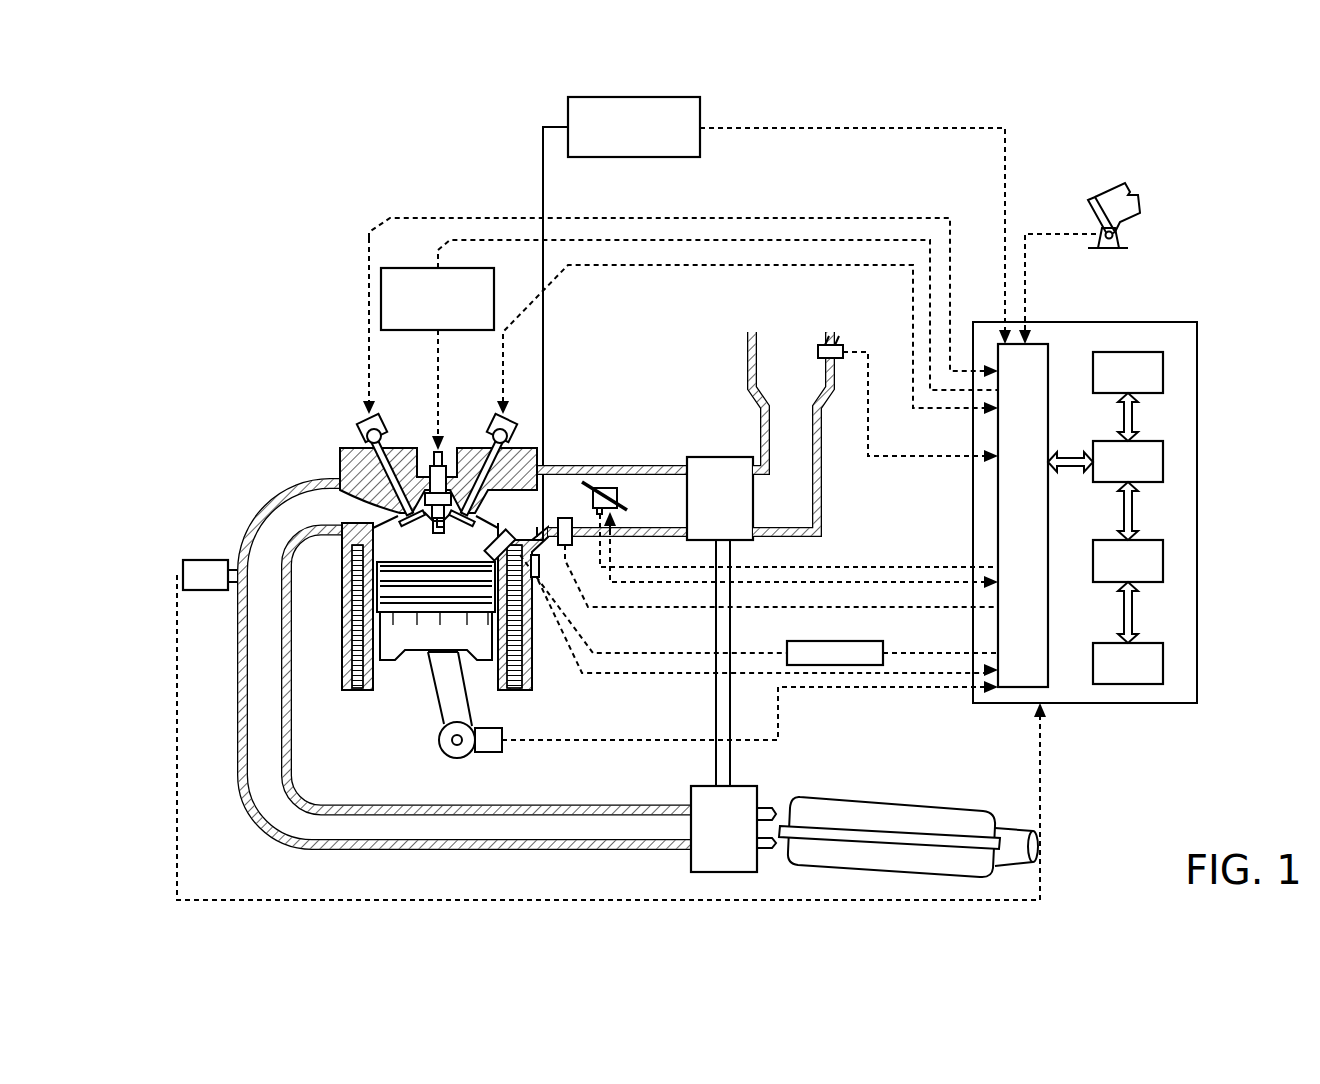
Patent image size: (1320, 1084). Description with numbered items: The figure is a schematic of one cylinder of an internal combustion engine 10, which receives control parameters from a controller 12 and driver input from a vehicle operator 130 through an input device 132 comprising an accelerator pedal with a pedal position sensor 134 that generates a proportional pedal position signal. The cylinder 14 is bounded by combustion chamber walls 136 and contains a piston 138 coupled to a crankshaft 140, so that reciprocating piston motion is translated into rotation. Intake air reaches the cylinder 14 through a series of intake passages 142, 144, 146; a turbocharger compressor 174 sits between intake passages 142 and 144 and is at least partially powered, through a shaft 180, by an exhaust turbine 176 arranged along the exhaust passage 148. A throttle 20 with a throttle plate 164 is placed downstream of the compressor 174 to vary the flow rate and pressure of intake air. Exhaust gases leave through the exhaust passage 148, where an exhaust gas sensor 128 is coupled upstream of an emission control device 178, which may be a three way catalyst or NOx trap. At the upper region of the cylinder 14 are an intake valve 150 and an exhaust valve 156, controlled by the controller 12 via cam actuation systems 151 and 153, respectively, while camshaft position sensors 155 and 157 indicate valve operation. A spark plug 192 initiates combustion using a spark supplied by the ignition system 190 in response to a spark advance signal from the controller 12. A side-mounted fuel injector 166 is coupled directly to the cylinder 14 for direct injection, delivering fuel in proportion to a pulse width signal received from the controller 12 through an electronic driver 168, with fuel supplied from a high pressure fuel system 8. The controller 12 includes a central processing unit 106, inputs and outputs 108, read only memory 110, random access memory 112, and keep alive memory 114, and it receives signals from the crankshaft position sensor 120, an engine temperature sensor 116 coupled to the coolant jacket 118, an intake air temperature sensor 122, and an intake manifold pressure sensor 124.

The high pressure fuel system 8 is at (765, 318).
The internal combustion engine 10 is at (262, 252).
The controller 12 is at (1127, 500).
The cylinder 14 is at (352, 566).
The throttle 20 is at (770, 508).
The central processing unit 106 is at (1163, 460).
The inputs and outputs 108 is at (1048, 352).
The read only memory 110 is at (1163, 370).
The random access memory 112 is at (1163, 560).
The keep alive memory 114 is at (1163, 662).
The engine temperature sensor 116 is at (541, 582).
The coolant jacket 118 is at (520, 690).
The crankshaft position sensor 120 is at (494, 756).
The intake air temperature sensor 122 is at (836, 343).
The intake manifold pressure sensor 124 is at (570, 552).
The exhaust gas sensor 128 is at (185, 566).
The vehicle operator 130 is at (1132, 199).
The input device 132 is at (1092, 212).
The pedal position sensor 134 is at (1120, 236).
The combustion chamber walls 136 is at (447, 632).
The piston 138 is at (420, 658).
The crankshaft 140 is at (451, 762).
The intake passage 142 is at (791, 432).
The intake passage 144 is at (612, 501).
The intake passage 146 is at (559, 501).
The exhaust passage 148 is at (467, 664).
The intake valve 150 is at (455, 474).
The cam actuation system 151 is at (727, 354).
The cam actuation system 153 is at (650, 330).
The camshaft position sensor 155 is at (522, 425).
The exhaust valve 156 is at (367, 483).
The camshaft position sensor 157 is at (357, 432).
The throttle plate 164 is at (583, 484).
The fuel injector 166 is at (509, 532).
The electronic driver 168 is at (790, 641).
The compressor 174 is at (707, 457).
The exhaust turbine 176 is at (690, 860).
The emission control device 178 is at (958, 800).
The shaft 180 is at (722, 750).
The ignition system 190 is at (395, 268).
The spark plug 192 is at (430, 476).